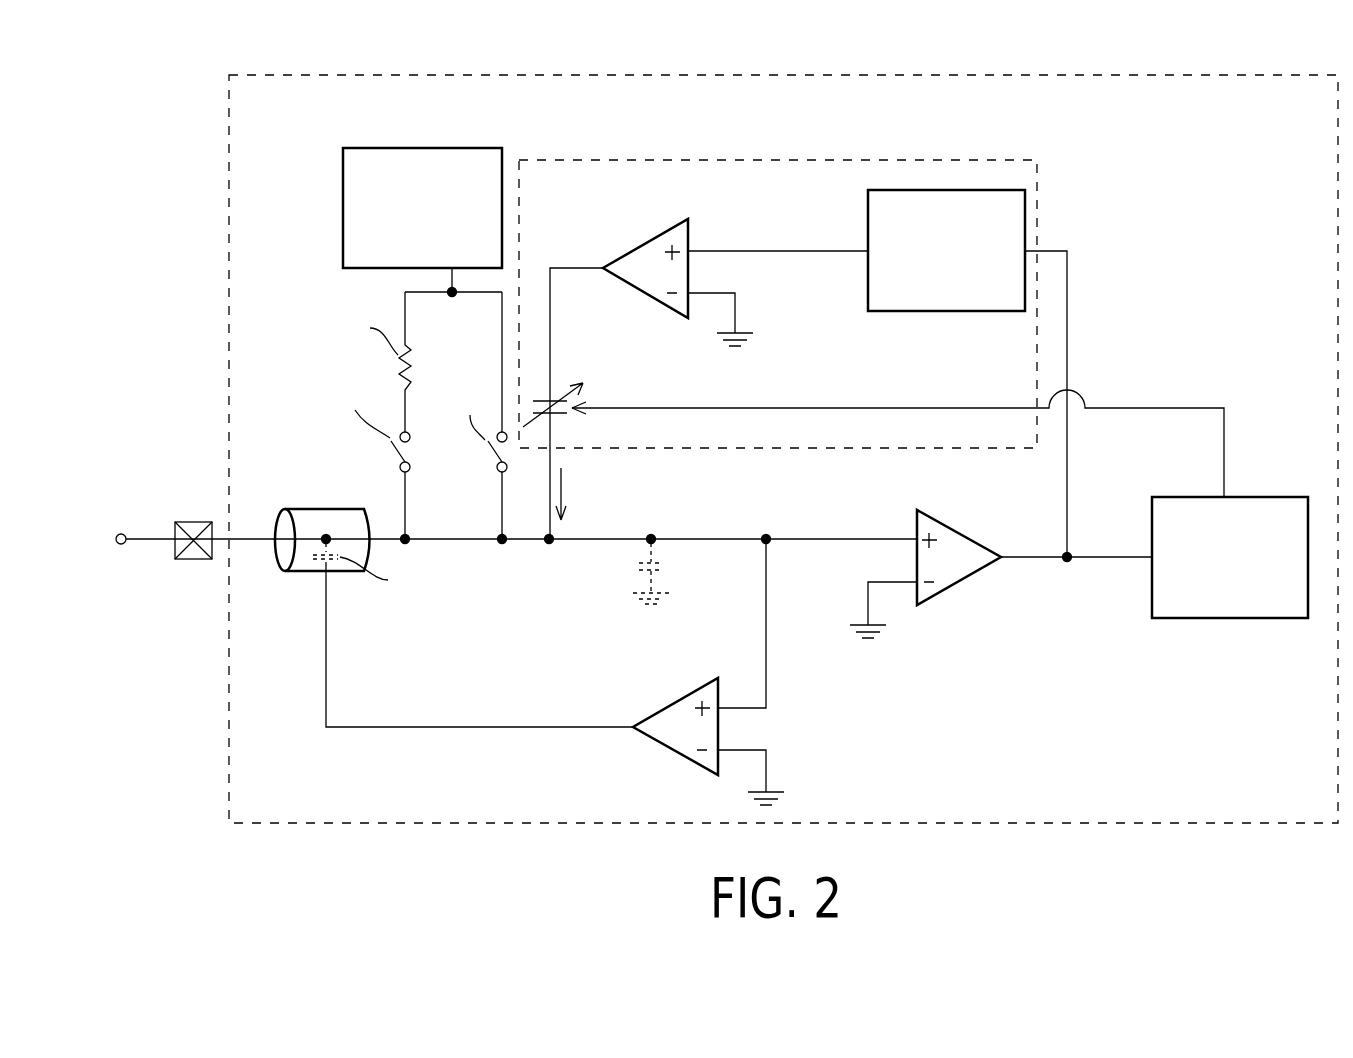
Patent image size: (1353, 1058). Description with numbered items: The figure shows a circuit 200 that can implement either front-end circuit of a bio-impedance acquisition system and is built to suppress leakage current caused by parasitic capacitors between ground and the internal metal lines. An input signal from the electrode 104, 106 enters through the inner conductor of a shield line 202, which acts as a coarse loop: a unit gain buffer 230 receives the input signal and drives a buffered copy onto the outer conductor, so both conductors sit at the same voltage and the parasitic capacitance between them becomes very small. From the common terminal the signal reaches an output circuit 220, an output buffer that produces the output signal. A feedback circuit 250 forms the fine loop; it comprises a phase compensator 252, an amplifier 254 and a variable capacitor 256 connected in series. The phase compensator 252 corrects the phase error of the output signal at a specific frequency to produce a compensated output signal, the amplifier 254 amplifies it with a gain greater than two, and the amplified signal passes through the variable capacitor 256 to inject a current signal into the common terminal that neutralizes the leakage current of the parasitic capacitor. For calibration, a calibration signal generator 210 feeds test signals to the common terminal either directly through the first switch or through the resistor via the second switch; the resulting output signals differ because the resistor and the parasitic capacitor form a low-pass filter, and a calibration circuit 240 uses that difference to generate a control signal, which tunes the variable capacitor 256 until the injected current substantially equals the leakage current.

The circuit 200 is at (953, 75).
The electrode 104 is at (162, 500).
The electrode 106 is at (190, 522).
The shield line 202 is at (380, 509).
The calibration signal generator 210 is at (430, 148).
The output circuit 220 is at (958, 530).
The unit gain buffer 230 is at (677, 698).
The calibration circuit 240 is at (1262, 497).
The feedback circuit 250 is at (905, 160).
The phase compensator 252 is at (1025, 222).
The amplifier 254 is at (648, 238).
The variable capacitor 256 is at (572, 410).